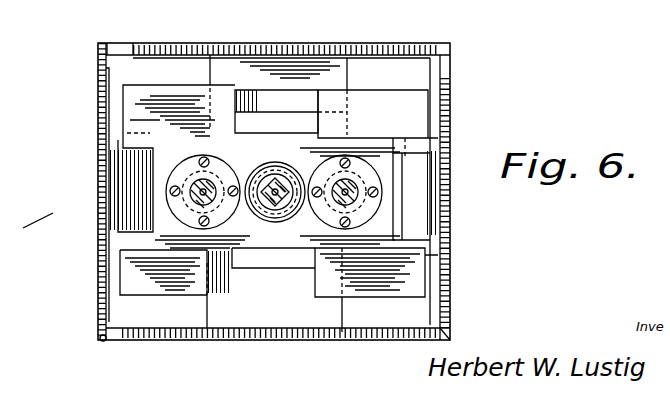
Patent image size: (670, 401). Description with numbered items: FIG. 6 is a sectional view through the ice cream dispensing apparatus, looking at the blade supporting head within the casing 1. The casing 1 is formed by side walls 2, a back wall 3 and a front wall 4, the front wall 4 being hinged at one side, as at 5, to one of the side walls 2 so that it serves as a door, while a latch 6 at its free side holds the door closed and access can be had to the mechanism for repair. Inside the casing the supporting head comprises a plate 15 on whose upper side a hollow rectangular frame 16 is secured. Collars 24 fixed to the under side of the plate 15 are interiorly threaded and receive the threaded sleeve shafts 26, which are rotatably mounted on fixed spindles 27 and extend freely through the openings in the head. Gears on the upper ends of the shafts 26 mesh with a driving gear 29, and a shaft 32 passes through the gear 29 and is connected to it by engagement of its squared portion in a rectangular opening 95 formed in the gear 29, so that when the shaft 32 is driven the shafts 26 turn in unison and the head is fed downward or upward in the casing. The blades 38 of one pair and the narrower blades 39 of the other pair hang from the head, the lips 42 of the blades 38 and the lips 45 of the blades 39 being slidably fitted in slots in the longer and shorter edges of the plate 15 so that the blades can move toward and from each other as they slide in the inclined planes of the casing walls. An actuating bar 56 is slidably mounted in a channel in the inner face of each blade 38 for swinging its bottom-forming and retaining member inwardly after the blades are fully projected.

The casing 1 is at (455, 74).
The side walls 2 is at (100, 58).
The back wall 3 is at (404, 50).
The front wall 4 is at (338, 336).
The hinge 5 is at (103, 342).
The latch 6 is at (452, 333).
The plate 15 is at (384, 97).
The hollow rectangular frame 16 is at (312, 212).
The collars 24 is at (366, 172).
The threaded sleeve shafts 26 is at (365, 187).
The spindles 27 is at (350, 178).
The driving gear 29 is at (262, 178).
The shaft 32 is at (277, 200).
The blades 38 is at (367, 50).
The blades 39 is at (449, 153).
The lip 42 is at (322, 70).
The lip 45 is at (428, 200).
The actuating bar 56 is at (285, 47).
The rectangular opening 95 is at (278, 184).